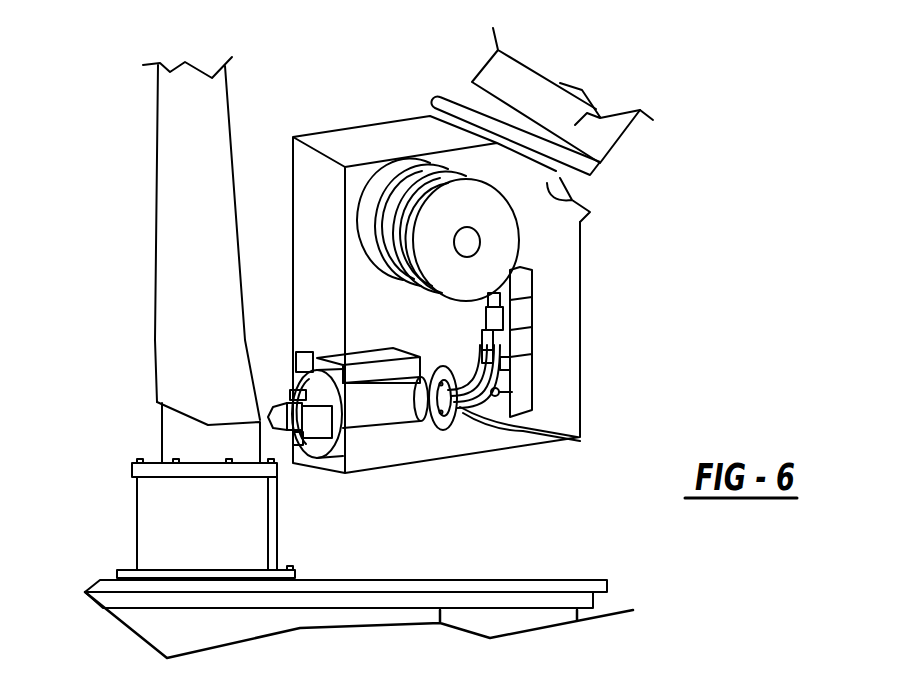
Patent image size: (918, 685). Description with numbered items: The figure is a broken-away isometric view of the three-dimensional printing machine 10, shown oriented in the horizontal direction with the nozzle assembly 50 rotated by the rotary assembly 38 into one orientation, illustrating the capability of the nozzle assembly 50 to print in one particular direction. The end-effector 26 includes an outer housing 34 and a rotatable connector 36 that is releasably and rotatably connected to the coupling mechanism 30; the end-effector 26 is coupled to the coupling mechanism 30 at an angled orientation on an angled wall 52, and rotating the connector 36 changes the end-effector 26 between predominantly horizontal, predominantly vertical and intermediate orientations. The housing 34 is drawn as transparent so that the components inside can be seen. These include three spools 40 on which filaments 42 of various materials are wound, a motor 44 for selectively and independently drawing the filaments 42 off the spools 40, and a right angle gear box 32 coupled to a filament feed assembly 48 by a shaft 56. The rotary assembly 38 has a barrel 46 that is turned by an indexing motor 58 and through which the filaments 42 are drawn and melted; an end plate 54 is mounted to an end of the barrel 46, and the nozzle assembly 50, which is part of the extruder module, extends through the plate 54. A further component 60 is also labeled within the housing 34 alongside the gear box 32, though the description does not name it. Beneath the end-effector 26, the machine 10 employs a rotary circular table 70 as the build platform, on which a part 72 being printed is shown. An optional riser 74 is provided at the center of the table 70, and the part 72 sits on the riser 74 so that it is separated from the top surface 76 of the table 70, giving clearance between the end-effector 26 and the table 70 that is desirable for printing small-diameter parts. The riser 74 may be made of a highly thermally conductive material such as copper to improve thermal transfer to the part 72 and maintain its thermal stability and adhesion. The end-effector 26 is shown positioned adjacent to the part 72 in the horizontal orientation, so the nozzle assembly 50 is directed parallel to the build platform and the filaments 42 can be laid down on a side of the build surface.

The 3D printing machine 10 is at (697, 127).
The end-effector 26 is at (610, 256).
The coupling mechanism 30 is at (584, 92).
The right angle gear box 32 is at (525, 387).
The outer housing 34 is at (360, 137).
The rotatable connector 36 is at (480, 100).
The rotary assembly 38 is at (403, 450).
The spools 40 is at (398, 173).
The filaments 42 is at (517, 430).
The motor 44 is at (493, 310).
The barrel 46 is at (377, 407).
The filament feed assembly 48 is at (460, 420).
The nozzle assembly 50 is at (291, 445).
The angled wall 52 is at (583, 200).
The end plate 54 is at (318, 450).
The shaft 56 is at (535, 415).
The indexing motor 58 is at (385, 367).
The sensor 60 is at (520, 313).
The rotary circular table 70 is at (540, 620).
The part 72 is at (168, 270).
The riser 74 is at (150, 525).
The top surface 76 is at (505, 587).